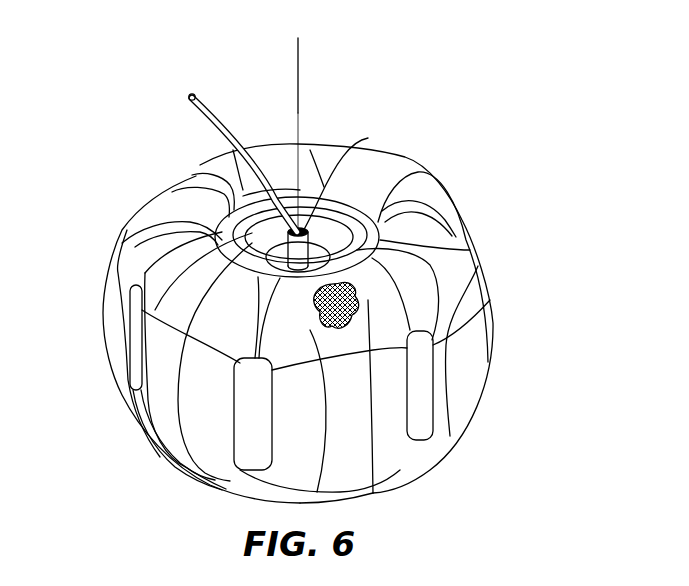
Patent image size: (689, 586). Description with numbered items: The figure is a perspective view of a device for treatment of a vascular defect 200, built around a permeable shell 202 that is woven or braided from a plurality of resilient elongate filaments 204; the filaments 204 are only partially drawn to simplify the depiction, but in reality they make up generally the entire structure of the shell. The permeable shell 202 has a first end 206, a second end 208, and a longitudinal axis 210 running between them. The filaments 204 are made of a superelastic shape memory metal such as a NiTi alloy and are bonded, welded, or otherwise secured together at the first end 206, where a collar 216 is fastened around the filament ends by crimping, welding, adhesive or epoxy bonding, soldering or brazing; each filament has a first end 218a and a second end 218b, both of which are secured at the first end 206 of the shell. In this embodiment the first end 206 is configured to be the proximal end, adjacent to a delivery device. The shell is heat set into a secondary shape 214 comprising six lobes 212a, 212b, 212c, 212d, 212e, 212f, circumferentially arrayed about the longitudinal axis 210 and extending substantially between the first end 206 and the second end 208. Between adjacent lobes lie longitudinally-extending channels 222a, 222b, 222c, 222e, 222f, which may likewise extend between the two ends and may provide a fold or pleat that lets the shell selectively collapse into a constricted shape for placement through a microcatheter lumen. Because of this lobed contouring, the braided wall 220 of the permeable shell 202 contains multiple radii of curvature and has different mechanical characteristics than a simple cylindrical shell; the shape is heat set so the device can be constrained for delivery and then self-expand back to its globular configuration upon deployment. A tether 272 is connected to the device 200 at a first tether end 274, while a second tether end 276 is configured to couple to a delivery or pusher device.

The device for treatment of a vascular defect 200 is at (278, 92).
The permeable shell 202 is at (463, 245).
The resilient elongate filaments 204 is at (358, 300).
The first end 206 is at (289, 160).
The second end 208 is at (412, 448).
The longitudinal axis 210 is at (300, 66).
The lobe 212a is at (355, 431).
The lobe 212b is at (158, 408).
The lobe 212c is at (143, 222).
The lobe 212d is at (271, 146).
The lobe 212e is at (422, 180).
The lobe 212f is at (492, 320).
The secondary shape 214 is at (84, 290).
The collar 216 is at (303, 231).
The first ends of the filaments 218a is at (236, 160).
The second ends of the filaments 218b is at (303, 231).
The braided wall 220 is at (360, 314).
The longitudinally-extending channel 222a is at (255, 473).
The longitudinally-extending channel 222b is at (130, 342).
The longitudinally-extending channel 222c is at (200, 177).
The longitudinally-extending channel 222e is at (392, 212).
The longitudinally-extending channel 222f is at (427, 393).
The tether 272 is at (203, 120).
The first tether end 274 is at (353, 179).
The second tether end 276 is at (189, 95).